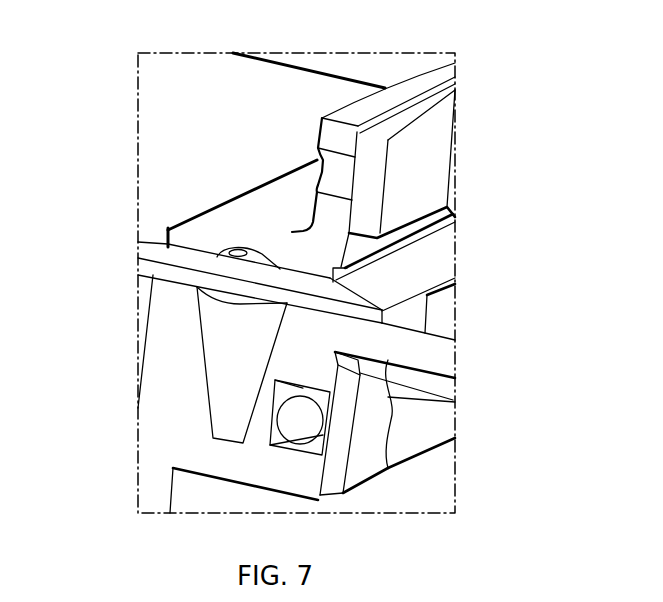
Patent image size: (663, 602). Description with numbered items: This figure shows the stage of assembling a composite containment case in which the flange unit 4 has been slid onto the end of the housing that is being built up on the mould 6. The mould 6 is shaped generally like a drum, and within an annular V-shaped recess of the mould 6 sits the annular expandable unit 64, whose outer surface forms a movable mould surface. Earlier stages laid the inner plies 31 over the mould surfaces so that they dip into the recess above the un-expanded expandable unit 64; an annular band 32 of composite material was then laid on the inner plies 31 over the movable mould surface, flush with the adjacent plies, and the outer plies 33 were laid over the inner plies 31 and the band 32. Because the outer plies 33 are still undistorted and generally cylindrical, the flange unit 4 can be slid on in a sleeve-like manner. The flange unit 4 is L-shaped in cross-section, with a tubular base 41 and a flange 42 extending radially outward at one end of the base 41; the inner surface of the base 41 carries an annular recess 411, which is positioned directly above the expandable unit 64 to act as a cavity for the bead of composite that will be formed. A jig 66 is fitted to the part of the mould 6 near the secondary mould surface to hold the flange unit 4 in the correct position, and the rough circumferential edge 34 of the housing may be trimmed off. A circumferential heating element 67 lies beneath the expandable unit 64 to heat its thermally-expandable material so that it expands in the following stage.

The flange unit 4 is at (418, 73).
The base 41 is at (295, 188).
The flange 42 is at (400, 82).
The jig 66 is at (423, 162).
The rough circumferential edge 34 is at (432, 263).
The outer plies 33 is at (138, 242).
The inner plies 31 is at (138, 270).
The annular recess 411 is at (240, 254).
The annular band 32 is at (243, 292).
The expandable unit 64 is at (228, 379).
The circumferential heating element 67 is at (308, 418).
The mould 6 is at (152, 485).